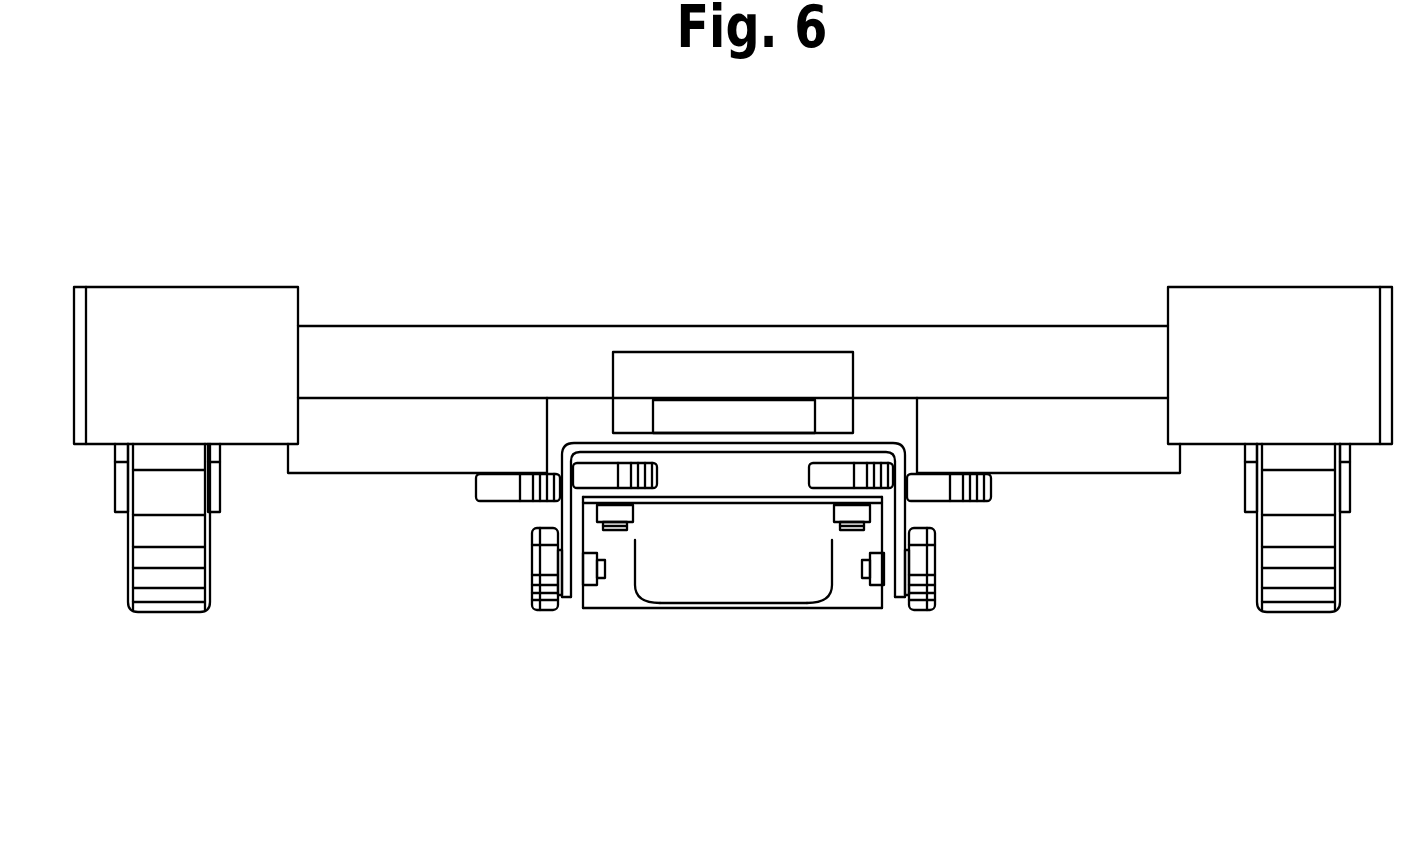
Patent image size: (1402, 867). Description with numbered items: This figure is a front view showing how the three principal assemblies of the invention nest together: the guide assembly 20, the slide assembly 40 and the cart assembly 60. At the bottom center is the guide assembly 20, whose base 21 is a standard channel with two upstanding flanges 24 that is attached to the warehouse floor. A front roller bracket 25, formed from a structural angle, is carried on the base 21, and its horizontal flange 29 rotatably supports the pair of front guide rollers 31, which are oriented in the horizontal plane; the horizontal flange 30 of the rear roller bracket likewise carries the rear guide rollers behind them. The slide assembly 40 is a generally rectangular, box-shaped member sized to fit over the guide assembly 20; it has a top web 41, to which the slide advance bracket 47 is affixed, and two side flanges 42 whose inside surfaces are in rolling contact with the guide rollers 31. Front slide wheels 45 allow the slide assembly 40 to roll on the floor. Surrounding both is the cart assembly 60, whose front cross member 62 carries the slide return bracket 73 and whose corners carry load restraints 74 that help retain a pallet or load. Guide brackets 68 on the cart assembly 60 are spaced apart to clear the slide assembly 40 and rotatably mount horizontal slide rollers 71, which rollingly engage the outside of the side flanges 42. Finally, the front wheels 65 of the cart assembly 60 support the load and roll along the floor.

The guide assembly 20 is at (722, 622).
The base 21 is at (695, 607).
The upstanding flanges 24 is at (822, 604).
The front roller bracket 25 is at (762, 603).
The horizontal flange 29 is at (852, 604).
The horizontal flange 30 is at (690, 505).
The front guide rollers 31 is at (588, 465).
The slide assembly 40 is at (937, 512).
The top web 41 is at (597, 441).
The side flanges 42 is at (535, 515).
The front slide wheels 45 is at (540, 612).
The slide advance bracket 47 is at (692, 415).
The cart assembly 60 is at (960, 310).
The front cross member 62 is at (1083, 352).
The front wheels 65 is at (152, 607).
The guide brackets 68 is at (330, 463).
The slide rollers 71 is at (477, 490).
The slide return bracket 73 is at (827, 410).
The load restraints 74 is at (197, 307).